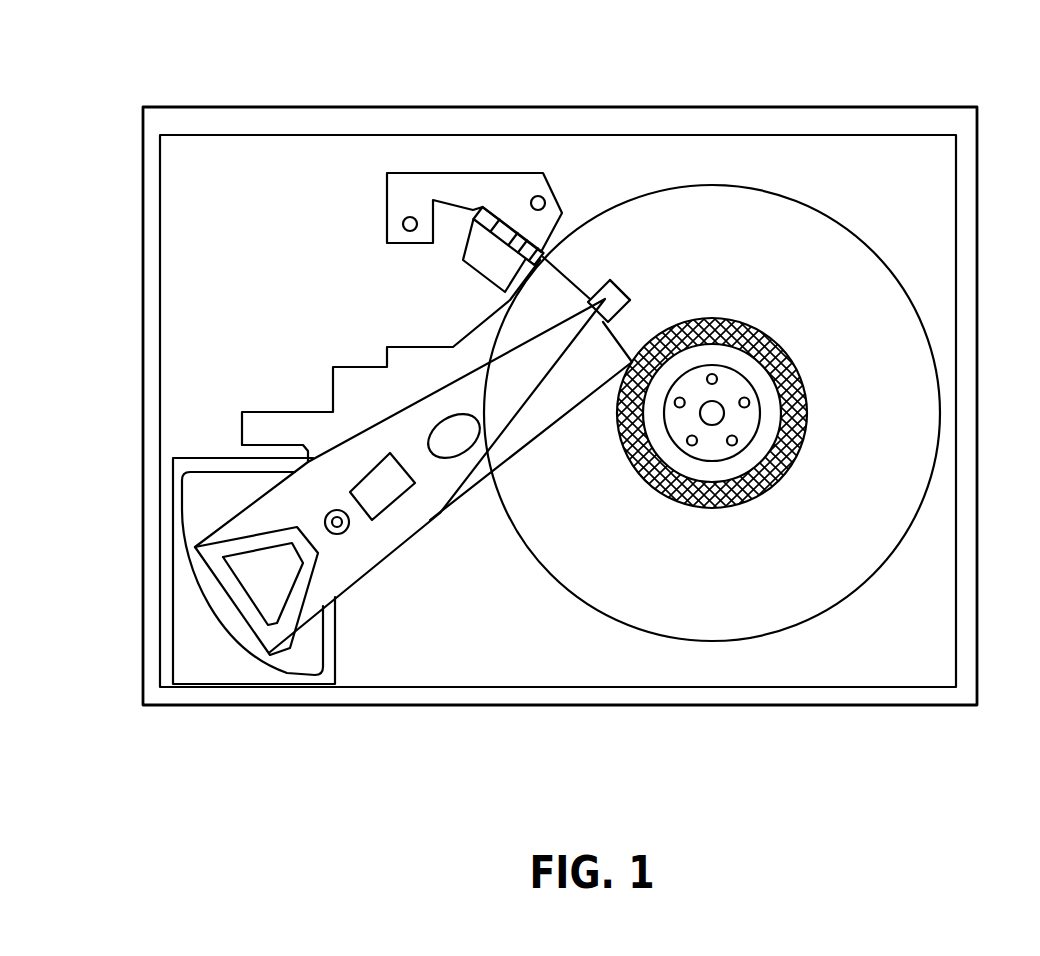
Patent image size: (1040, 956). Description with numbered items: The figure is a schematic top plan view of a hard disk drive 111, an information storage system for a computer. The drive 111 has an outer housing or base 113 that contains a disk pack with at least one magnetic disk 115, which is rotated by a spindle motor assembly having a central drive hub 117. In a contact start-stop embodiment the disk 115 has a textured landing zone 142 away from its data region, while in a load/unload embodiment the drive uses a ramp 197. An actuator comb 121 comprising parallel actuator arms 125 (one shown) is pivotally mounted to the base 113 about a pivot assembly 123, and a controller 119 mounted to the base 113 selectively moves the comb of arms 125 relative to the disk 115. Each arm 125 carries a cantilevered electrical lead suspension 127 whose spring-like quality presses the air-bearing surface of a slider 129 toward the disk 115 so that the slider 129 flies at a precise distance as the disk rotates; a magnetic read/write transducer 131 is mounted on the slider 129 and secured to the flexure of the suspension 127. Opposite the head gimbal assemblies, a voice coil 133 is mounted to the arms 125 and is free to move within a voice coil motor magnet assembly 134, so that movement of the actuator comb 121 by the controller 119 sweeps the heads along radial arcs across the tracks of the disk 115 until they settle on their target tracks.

The hard disk drive 111 is at (588, 54).
The base 113 is at (971, 170).
The magnetic disk 115 is at (824, 212).
The central drive hub 117 is at (745, 422).
The controller 119 is at (243, 663).
The actuator comb 121 is at (312, 442).
The pivot assembly 123 is at (345, 530).
The actuator arm 125 is at (440, 513).
The electrical lead suspension 127 is at (520, 373).
The slider 129 is at (606, 289).
The read/write transducer 131 is at (630, 302).
The voice coil 133 is at (230, 542).
The voice coil motor magnet assembly 134 is at (228, 613).
The textured landing zone 142 is at (722, 320).
The ramp 197 is at (495, 275).